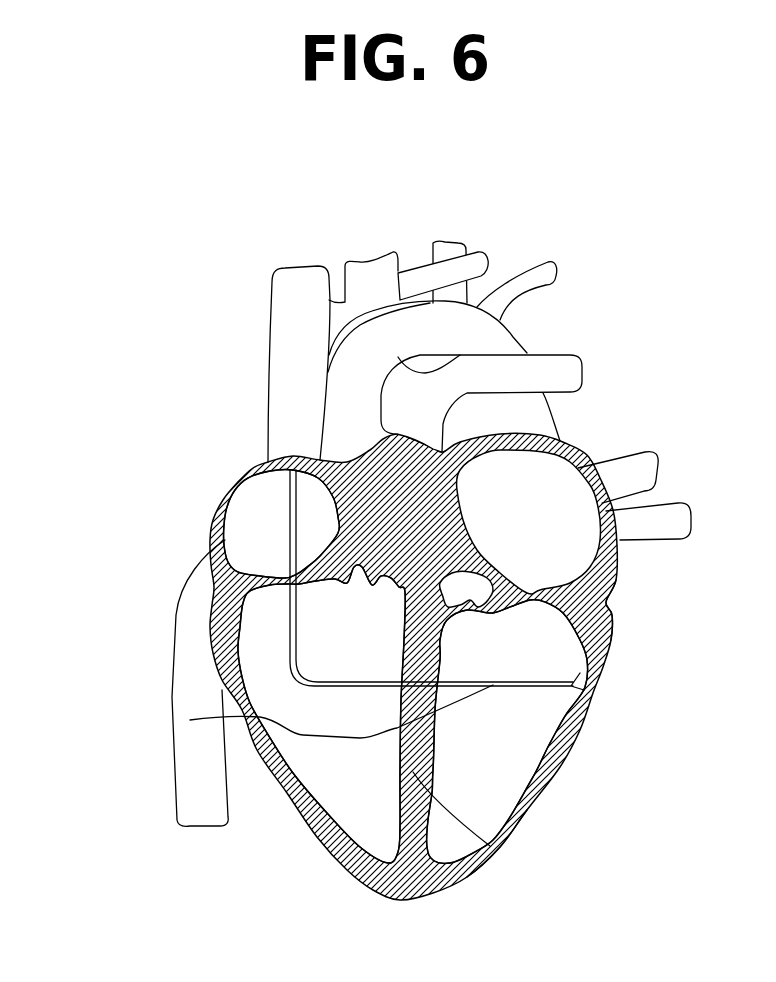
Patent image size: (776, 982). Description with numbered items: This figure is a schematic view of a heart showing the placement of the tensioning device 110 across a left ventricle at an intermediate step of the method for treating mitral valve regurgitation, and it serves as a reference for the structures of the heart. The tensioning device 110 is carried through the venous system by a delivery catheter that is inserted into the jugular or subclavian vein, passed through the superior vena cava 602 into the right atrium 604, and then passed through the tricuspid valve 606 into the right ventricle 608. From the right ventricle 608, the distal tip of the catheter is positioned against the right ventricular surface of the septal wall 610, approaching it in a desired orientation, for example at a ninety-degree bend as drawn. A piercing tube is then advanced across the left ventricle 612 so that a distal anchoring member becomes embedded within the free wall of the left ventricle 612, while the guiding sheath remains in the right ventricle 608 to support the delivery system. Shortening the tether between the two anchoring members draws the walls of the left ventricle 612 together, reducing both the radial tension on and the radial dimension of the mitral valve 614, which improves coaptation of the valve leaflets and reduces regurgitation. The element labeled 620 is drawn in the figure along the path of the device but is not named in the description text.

The superior vena cava 602 is at (293, 422).
The right atrium 604 is at (270, 528).
The tricuspid valve 606 is at (178, 605).
The right ventricle 608 is at (337, 777).
The septal wall 610 is at (527, 825).
The left ventricle 612 is at (510, 733).
The mitral valve 614 is at (600, 608).
The lead 620 is at (290, 663).
The tensioning device 110 is at (190, 720).